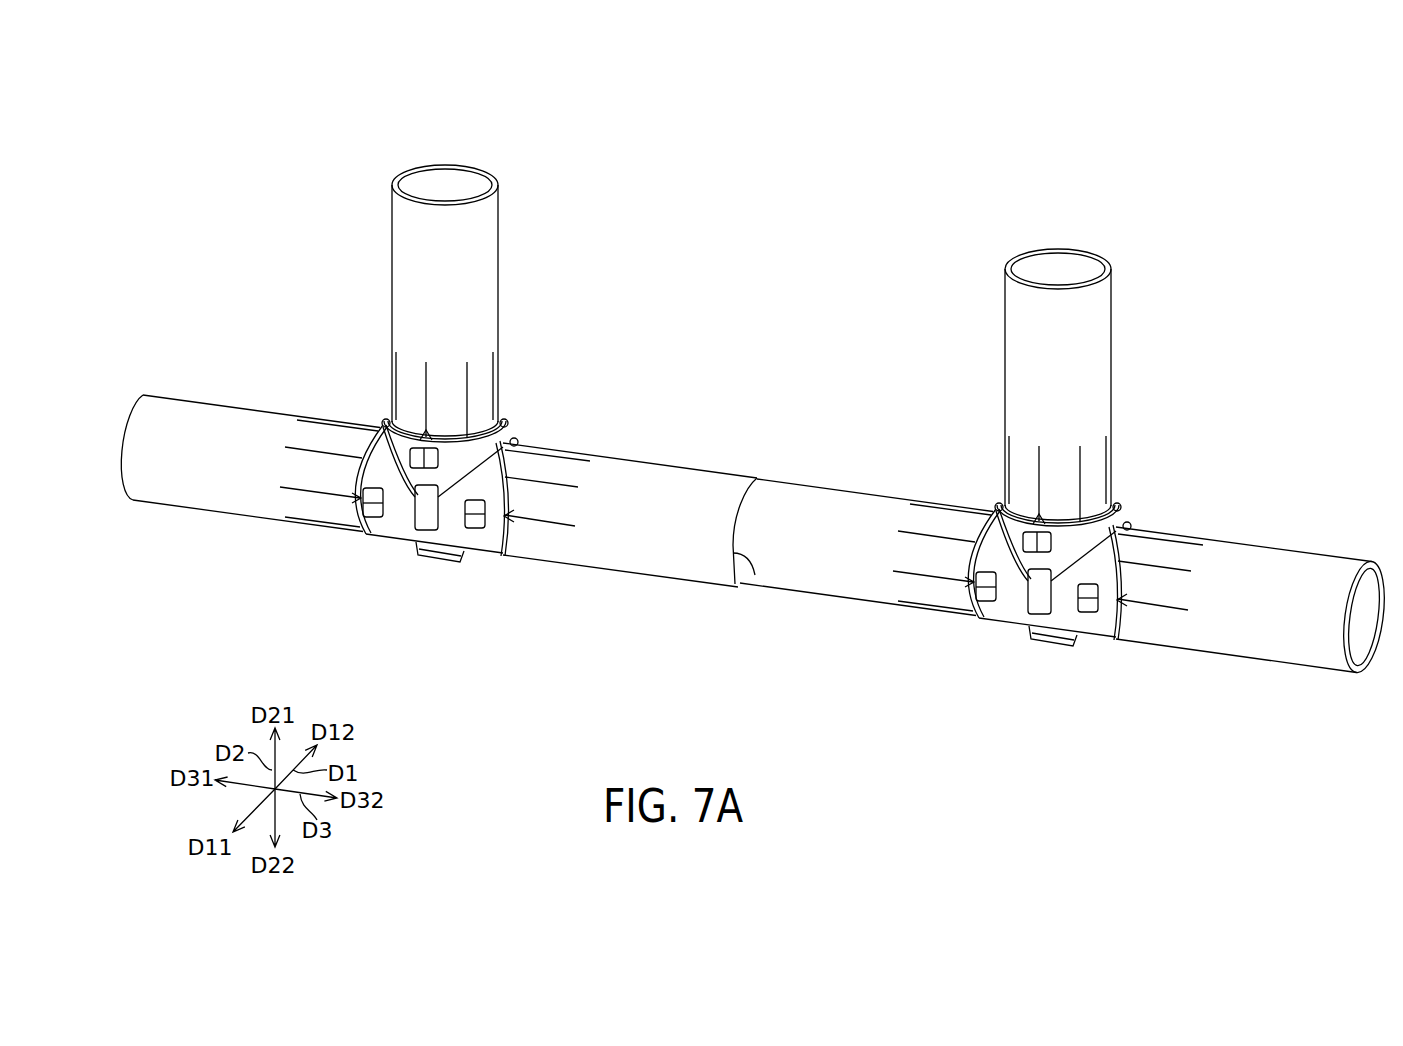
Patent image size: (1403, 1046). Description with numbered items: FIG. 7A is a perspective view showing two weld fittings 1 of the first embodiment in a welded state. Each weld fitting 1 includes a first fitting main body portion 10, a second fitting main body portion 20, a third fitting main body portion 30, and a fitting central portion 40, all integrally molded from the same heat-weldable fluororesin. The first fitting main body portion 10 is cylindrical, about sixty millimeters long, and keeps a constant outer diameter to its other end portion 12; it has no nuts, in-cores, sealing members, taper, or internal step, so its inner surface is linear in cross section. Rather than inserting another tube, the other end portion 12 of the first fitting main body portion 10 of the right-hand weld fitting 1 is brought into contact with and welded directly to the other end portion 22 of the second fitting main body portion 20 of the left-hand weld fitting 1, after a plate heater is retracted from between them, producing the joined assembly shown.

The weld fitting 1 is at (595, 113).
The first fitting main body portion 10 is at (236, 390).
The other end portion of the first fitting main body portion 12 is at (732, 548).
The second fitting main body portion 20 is at (663, 451).
The other end portion of the second fitting main body portion 22 is at (755, 575).
The third fitting main body portion 30 is at (458, 151).
The fitting central portion 40 is at (389, 558).